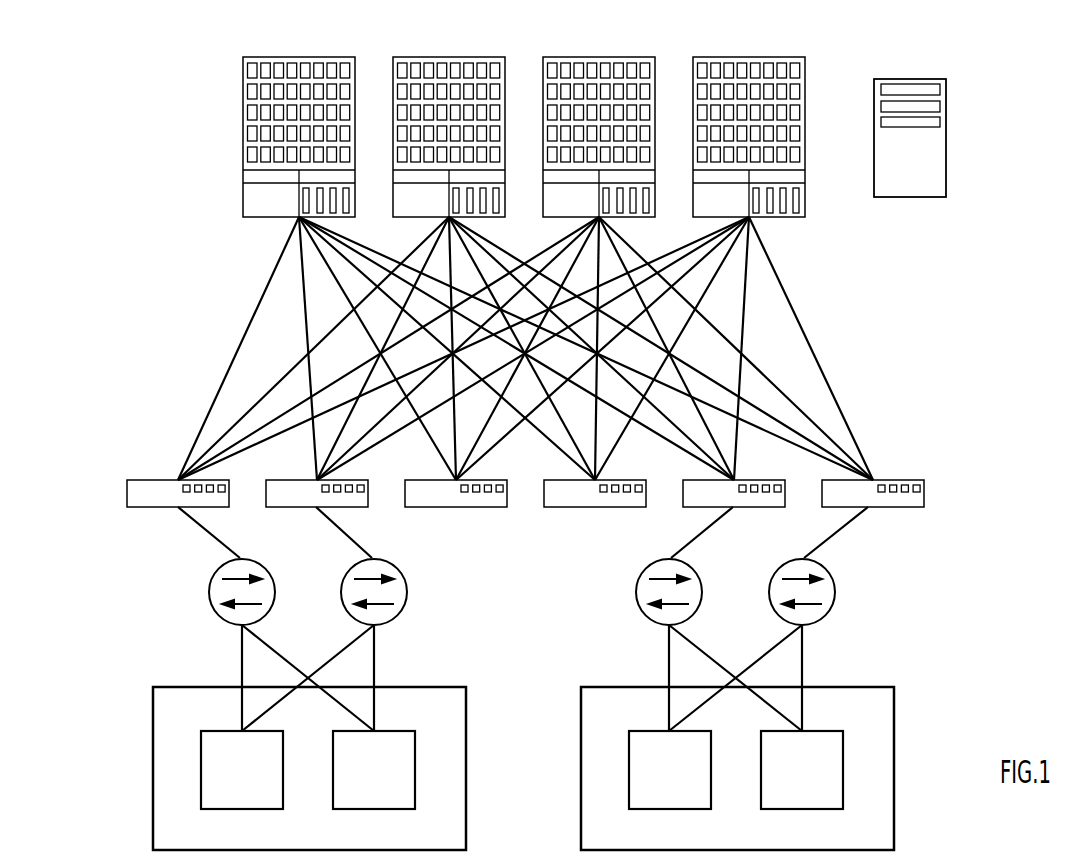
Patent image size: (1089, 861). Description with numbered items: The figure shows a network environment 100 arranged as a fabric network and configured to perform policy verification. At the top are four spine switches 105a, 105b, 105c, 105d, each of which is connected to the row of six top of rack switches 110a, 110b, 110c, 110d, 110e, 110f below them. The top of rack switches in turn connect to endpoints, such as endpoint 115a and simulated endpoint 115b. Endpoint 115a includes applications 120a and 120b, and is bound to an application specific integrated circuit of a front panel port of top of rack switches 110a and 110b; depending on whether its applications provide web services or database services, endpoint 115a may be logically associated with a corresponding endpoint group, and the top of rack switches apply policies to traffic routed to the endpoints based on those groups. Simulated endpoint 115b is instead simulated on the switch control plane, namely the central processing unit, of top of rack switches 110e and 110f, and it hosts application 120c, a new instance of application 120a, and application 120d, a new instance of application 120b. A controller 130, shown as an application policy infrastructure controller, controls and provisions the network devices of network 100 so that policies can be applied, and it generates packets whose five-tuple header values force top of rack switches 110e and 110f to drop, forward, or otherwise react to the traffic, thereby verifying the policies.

The network environment 100 is at (122, 154).
The spine switch 105a is at (355, 68).
The spine switch 105b is at (505, 68).
The spine switch 105c is at (655, 68).
The spine switch 105d is at (805, 68).
The top of rack switch 110a is at (229, 493).
The top of rack switch 110b is at (368, 493).
The top of rack switch 110c is at (507, 493).
The top of rack switch 110d is at (646, 493).
The top of rack switch 110e is at (785, 493).
The top of rack switch 110f is at (924, 493).
The endpoint 115a is at (466, 713).
The simulated endpoint 115b is at (894, 713).
The application 120a is at (283, 757).
The application 120b is at (415, 757).
The application 120c is at (711, 757).
The application 120d is at (843, 757).
The controller 130 is at (918, 197).